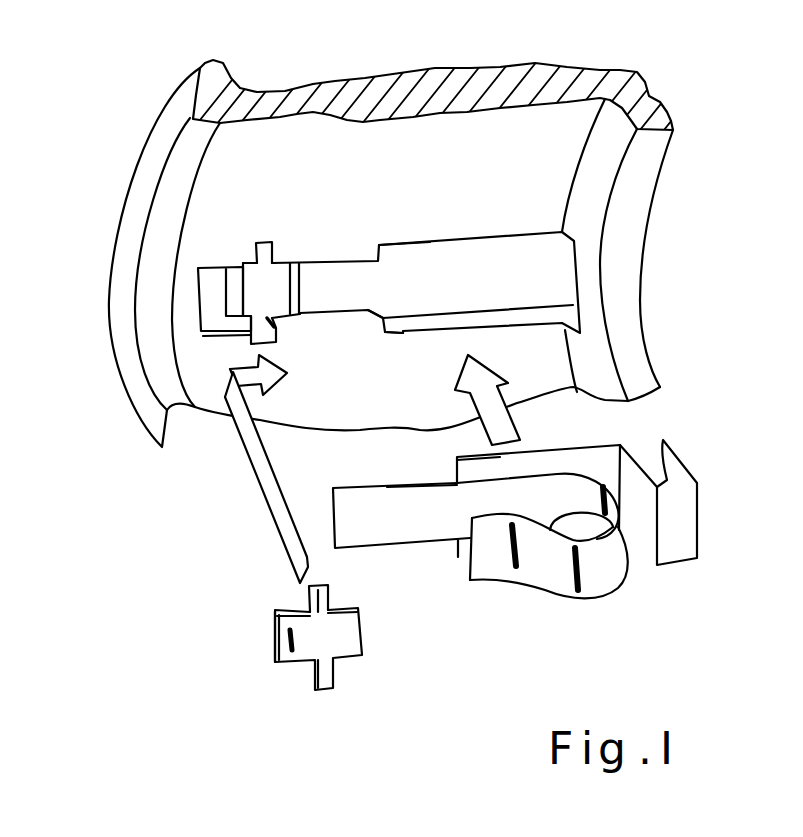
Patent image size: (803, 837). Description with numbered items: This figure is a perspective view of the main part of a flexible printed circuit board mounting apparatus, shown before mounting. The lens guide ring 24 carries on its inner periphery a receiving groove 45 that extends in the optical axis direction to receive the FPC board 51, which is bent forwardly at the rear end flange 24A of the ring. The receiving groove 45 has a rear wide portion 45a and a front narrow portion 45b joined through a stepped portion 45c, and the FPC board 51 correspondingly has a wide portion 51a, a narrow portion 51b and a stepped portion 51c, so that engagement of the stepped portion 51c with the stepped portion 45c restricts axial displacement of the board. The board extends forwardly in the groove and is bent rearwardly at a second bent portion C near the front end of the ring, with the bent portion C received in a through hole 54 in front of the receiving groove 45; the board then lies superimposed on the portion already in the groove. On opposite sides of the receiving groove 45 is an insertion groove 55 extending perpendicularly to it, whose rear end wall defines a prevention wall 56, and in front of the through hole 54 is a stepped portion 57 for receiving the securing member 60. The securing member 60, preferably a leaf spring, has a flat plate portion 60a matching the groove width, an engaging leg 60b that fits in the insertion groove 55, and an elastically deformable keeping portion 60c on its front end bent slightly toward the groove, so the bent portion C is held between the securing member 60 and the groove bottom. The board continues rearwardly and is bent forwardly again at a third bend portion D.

The lens guide ring 24 is at (453, 87).
The rear end flange 24A is at (632, 255).
The receiving groove 45 is at (466, 268).
The wide portion 45a is at (430, 236).
The narrow portion 45b is at (339, 315).
The stepped portion 45c is at (408, 331).
The FPC board 51 is at (452, 572).
The wide portion 51a is at (548, 456).
The narrow portion 51b is at (390, 488).
The stepped portion 51c is at (457, 465).
The through hole 54 is at (268, 293).
The insertion groove 55 is at (263, 241).
The prevention wall 56 is at (283, 253).
The stepped portion 57 is at (230, 289).
The securing member 60 is at (344, 667).
The flat plate portion 60a is at (353, 640).
The engaging leg 60b is at (308, 600).
The keeping portion 60c is at (282, 659).
The second bent portion C is at (353, 527).
The third bend portion D is at (607, 582).